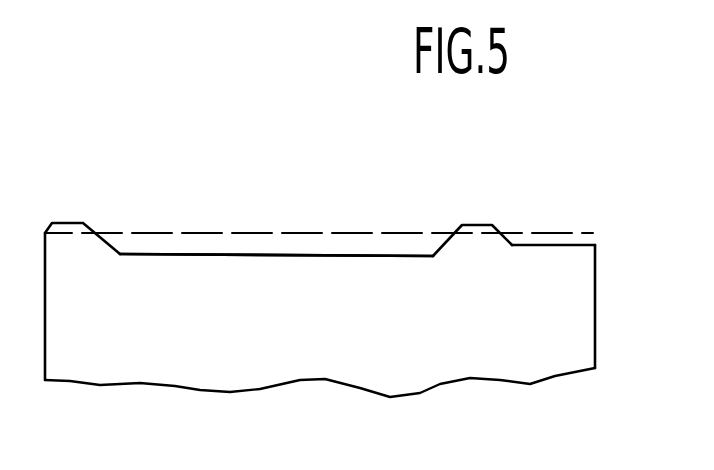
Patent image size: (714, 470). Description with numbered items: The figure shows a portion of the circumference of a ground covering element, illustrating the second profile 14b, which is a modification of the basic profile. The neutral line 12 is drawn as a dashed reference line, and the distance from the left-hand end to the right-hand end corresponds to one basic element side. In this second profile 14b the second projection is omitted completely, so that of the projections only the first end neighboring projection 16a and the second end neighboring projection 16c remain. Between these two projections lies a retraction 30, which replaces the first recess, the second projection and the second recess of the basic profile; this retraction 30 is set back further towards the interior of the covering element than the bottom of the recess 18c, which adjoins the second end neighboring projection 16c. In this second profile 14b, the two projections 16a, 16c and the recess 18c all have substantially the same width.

The neutral line 12 is at (377, 232).
The second profile 14b is at (228, 250).
The first end neighboring projection 16a is at (77, 224).
The second end neighboring projection 16c is at (482, 233).
The recess 18c is at (552, 248).
The retraction 30 is at (315, 259).